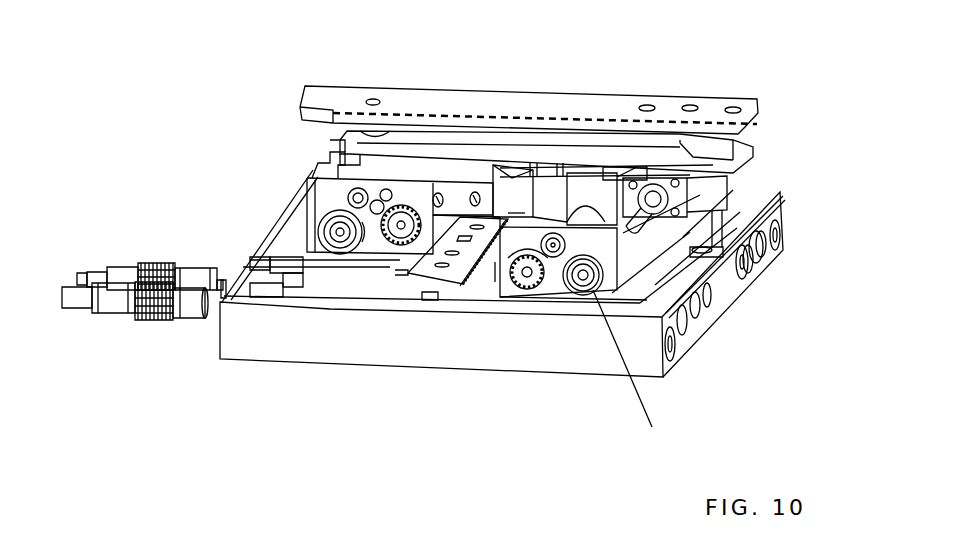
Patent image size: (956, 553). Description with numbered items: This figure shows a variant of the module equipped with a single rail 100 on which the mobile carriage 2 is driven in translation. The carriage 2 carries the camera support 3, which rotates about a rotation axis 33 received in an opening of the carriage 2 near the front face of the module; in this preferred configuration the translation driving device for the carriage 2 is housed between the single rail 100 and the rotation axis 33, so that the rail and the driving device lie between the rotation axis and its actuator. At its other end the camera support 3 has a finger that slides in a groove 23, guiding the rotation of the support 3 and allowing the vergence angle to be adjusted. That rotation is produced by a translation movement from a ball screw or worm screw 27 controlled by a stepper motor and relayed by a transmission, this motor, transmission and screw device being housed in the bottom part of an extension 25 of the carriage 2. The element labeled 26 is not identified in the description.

The carriage 2 is at (282, 190).
The camera support 3 is at (618, 117).
The groove 23 is at (335, 152).
The extension of the carriage 25 is at (418, 167).
The gear 26 is at (395, 245).
The ball screw or worm screw 27 is at (340, 254).
The rotation axis 33 is at (740, 183).
The single rail 100 is at (458, 272).